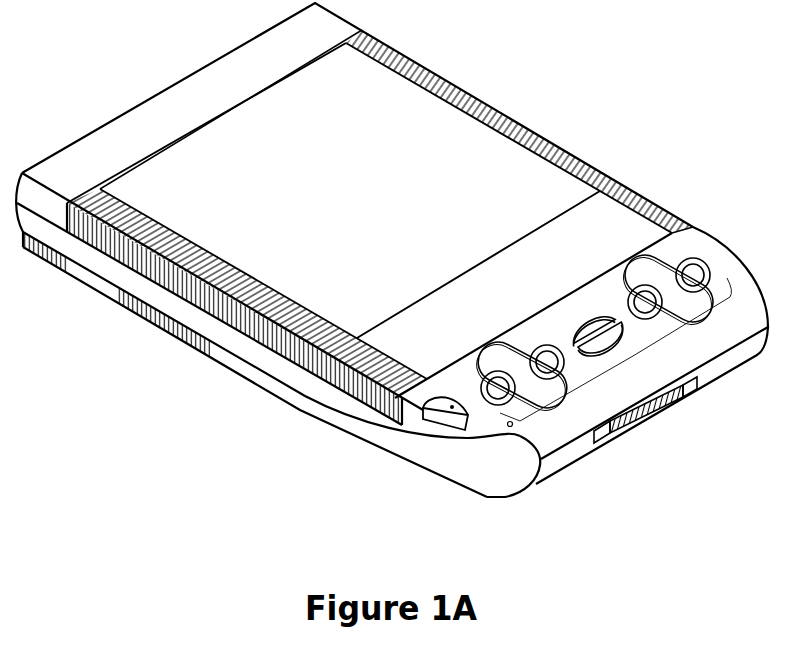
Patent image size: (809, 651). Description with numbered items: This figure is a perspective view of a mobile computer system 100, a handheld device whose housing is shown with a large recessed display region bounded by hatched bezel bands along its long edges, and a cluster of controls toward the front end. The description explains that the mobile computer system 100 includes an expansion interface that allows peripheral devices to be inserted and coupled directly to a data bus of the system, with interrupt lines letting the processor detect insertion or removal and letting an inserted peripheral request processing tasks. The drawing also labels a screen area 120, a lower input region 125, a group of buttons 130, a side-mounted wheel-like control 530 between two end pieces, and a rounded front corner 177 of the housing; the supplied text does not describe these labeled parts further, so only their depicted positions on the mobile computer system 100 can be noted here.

The mobile computer system 100 is at (258, 439).
The display screen 120 is at (380, 227).
The handwriting input area 125 is at (533, 315).
The application buttons 130 is at (633, 356).
The scroll wheel 530 is at (598, 442).
The housing front corner 177 is at (445, 478).